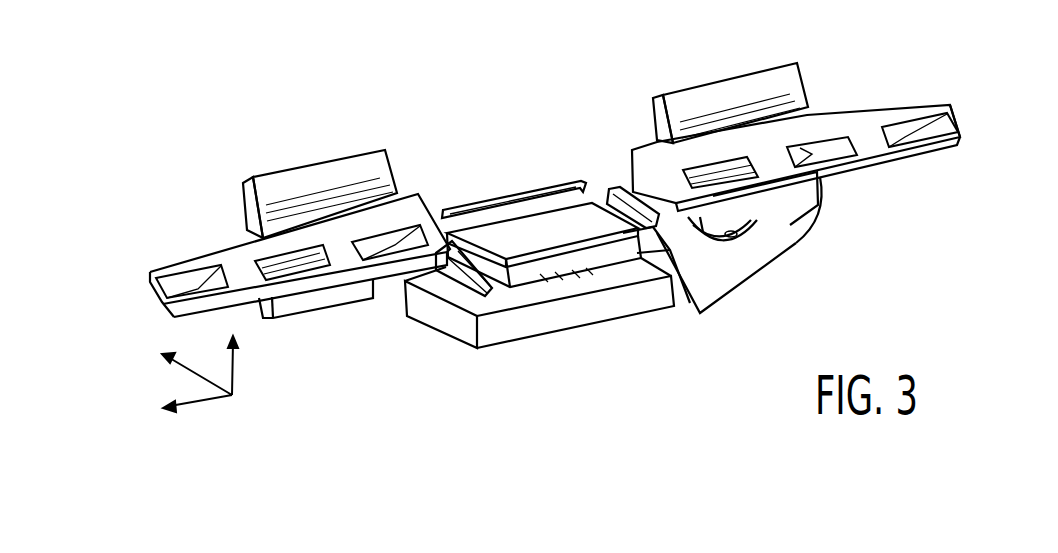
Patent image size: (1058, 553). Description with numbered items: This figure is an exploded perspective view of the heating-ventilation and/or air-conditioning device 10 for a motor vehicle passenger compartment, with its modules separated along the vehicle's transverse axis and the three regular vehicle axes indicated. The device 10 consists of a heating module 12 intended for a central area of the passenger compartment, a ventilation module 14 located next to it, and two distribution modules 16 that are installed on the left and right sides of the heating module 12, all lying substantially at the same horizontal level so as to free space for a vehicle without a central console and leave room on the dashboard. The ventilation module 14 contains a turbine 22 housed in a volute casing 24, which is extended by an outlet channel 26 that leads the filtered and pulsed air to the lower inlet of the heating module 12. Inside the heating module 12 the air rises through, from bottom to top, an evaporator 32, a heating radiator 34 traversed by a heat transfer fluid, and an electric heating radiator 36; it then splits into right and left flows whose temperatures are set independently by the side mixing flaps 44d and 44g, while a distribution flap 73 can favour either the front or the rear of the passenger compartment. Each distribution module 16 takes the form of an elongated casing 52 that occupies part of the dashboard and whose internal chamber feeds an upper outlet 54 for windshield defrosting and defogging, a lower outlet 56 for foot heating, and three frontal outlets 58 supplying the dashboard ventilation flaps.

The heating-ventilation and/or air-conditioning device 10 is at (246, 141).
The heating module 12 is at (534, 272).
The ventilation module 14 is at (747, 261).
The distribution module 16 is at (147, 294).
The turbine 22 is at (740, 236).
The volute casing 24 is at (794, 241).
The outlet channel 26 is at (723, 303).
The evaporator 32 is at (453, 322).
The heating radiator 34 is at (540, 267).
The electric heating radiator 36 is at (599, 236).
The side mixing flap 44g is at (488, 290).
The side mixing flap 44d is at (622, 210).
The elongated casing 52 is at (188, 258).
The upper outlet 54 is at (333, 168).
The lower outlet 56 is at (320, 310).
The frontal outlet 58 is at (205, 283).
The distribution flap 73 is at (518, 197).